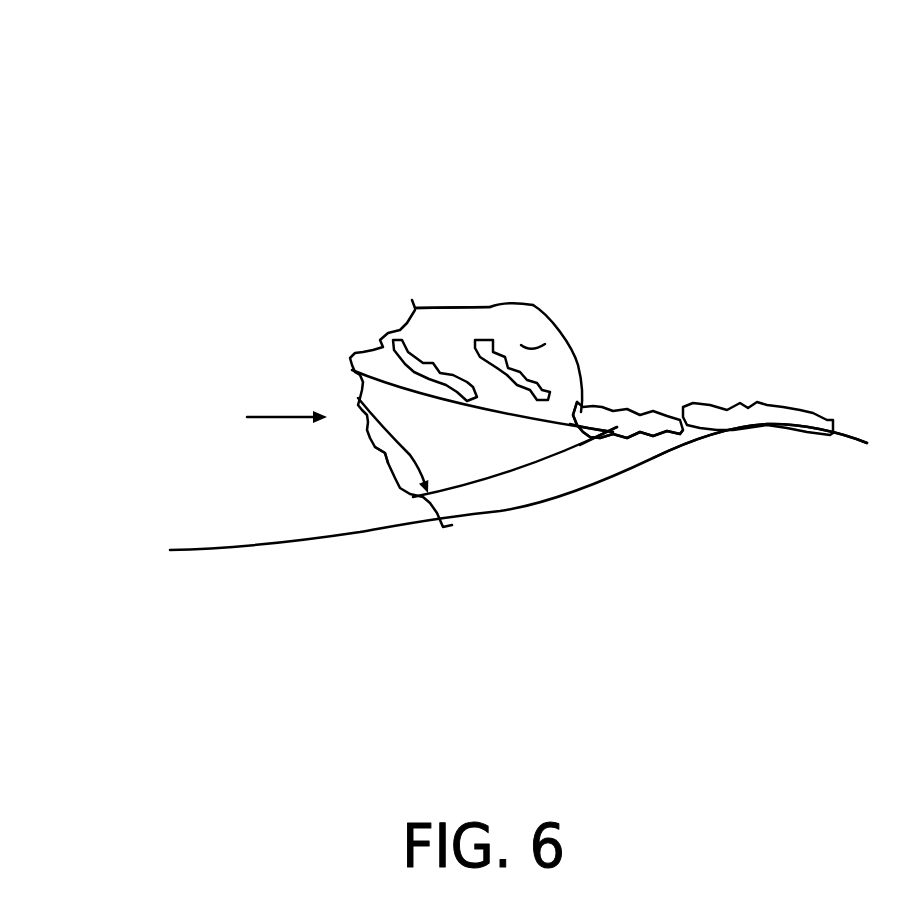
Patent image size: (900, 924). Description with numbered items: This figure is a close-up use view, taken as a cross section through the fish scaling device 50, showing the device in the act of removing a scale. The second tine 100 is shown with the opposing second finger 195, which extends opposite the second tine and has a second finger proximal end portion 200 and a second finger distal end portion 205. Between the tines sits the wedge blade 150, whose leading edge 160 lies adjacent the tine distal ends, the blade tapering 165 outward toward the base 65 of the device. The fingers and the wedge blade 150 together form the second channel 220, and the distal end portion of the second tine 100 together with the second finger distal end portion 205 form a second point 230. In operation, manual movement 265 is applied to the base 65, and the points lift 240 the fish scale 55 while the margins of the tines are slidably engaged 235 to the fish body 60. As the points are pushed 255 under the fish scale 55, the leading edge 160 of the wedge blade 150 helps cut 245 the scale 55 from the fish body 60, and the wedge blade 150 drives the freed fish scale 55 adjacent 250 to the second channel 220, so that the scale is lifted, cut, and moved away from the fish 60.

The fish scaling device 50 is at (750, 89).
The fish scale 55 is at (405, 310).
The fish body 60 is at (243, 548).
The base 65 is at (357, 405).
The second tine 100 is at (493, 497).
The wedge blade 150 is at (440, 462).
The leading edge 160 is at (686, 478).
The tapering 165 is at (393, 392).
The second finger 195 is at (464, 340).
The second finger proximal end portion 200 is at (394, 372).
The second finger distal end portion 205 is at (449, 308).
The second channel 220 is at (533, 346).
The second point 230 is at (686, 478).
The slidably engaged 235 is at (553, 505).
The lift 240 is at (635, 424).
The cut 245 is at (620, 413).
The adjacent 250 is at (579, 413).
The pushed 255 is at (607, 425).
The manual movement 265 is at (262, 417).